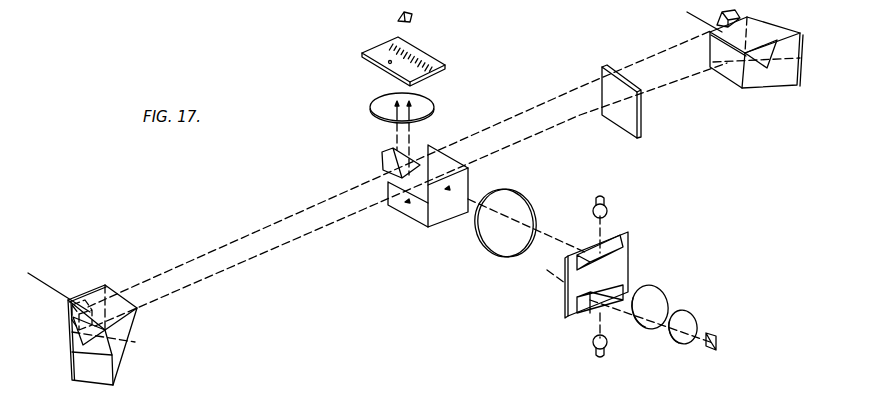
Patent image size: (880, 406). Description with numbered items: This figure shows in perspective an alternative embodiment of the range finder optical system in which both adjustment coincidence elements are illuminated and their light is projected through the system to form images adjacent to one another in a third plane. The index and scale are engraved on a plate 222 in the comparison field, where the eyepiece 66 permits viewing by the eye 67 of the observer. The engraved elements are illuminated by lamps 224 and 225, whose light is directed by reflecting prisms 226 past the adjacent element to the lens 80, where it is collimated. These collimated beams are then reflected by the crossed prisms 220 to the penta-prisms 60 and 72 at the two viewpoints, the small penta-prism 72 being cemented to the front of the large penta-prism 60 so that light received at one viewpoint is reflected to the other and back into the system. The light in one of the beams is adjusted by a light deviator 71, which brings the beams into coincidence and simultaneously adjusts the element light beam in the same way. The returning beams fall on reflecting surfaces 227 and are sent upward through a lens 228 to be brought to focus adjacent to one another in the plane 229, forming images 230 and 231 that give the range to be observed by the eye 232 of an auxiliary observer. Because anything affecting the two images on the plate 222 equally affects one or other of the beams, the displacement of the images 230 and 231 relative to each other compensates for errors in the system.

The large penta-prism 60 is at (118, 364).
The small penta-prism 72 is at (67, 316).
The light deviator 71 is at (623, 125).
The crossed prisms 220 is at (470, 180).
The reflecting surfaces 227 is at (382, 162).
The lens 228 is at (371, 113).
The plane 229 is at (413, 79).
The image 230 is at (389, 63).
The image 231 is at (417, 53).
The eye 232 is at (396, 17).
The lens 80 is at (487, 243).
The plate 222 is at (620, 257).
The reflecting prism 226 is at (617, 233).
The lamp 225 is at (608, 205).
The lamp 224 is at (605, 345).
The eyepiece 66 is at (678, 312).
The eye 67 is at (715, 338).